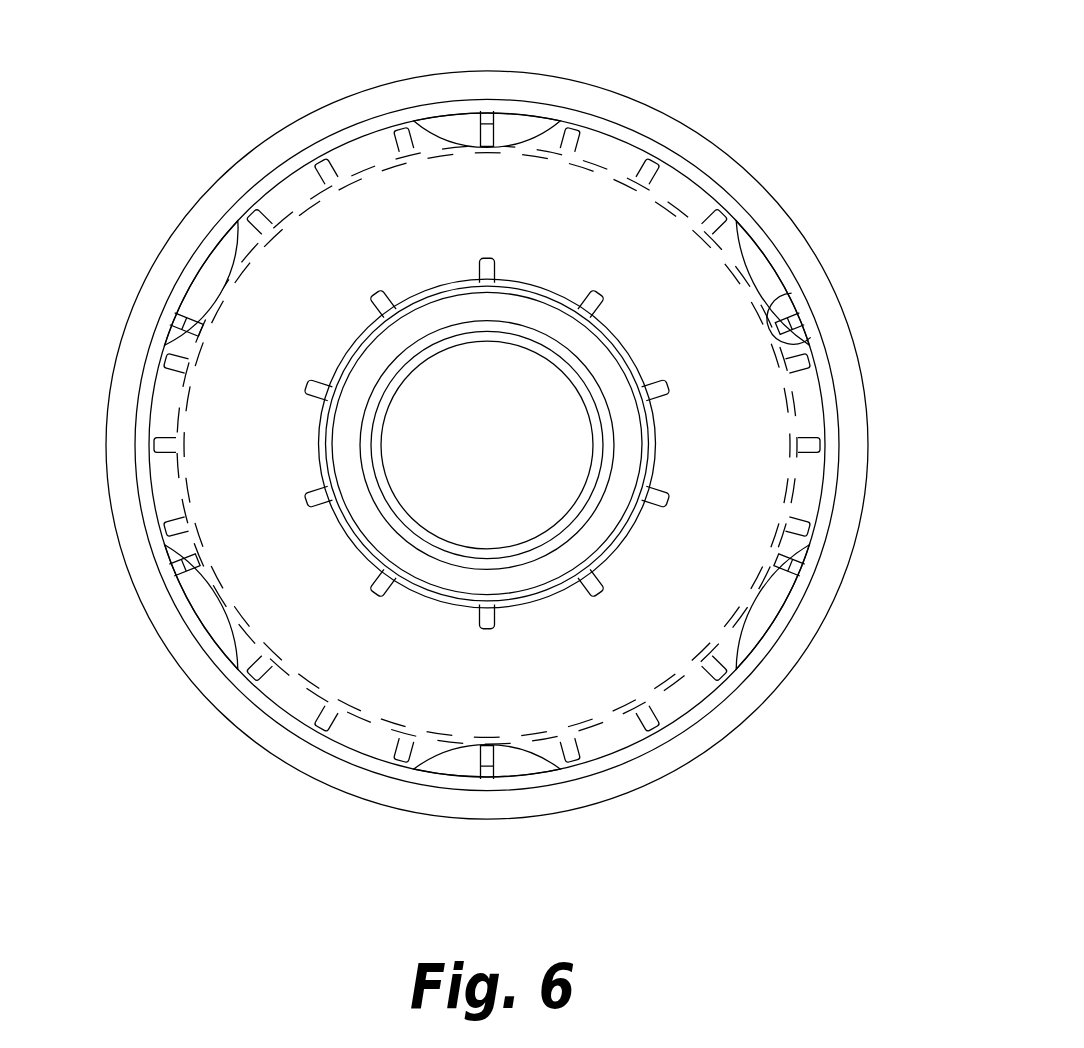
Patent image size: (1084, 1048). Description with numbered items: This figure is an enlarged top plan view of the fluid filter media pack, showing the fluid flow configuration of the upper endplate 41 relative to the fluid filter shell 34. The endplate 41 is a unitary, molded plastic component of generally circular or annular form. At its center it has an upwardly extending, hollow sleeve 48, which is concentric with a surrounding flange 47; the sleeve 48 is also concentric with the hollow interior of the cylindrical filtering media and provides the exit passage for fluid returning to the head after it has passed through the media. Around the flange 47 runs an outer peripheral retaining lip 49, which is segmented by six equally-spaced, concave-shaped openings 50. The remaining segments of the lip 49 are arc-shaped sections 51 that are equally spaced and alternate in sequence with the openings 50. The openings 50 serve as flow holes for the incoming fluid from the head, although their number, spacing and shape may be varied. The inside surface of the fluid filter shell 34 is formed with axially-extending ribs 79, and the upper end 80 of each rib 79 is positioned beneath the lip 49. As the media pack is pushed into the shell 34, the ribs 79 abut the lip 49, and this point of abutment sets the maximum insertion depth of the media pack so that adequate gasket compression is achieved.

The fluid filter shell 34 is at (822, 638).
The endplate 41 is at (708, 283).
The flange 47 is at (740, 433).
The sleeve 48 is at (385, 515).
The retaining lip 49 is at (317, 148).
The openings 50 is at (214, 281).
The arc-shaped sections 51 is at (165, 482).
The ribs 79 is at (470, 113).
The upper end 80 is at (495, 131).